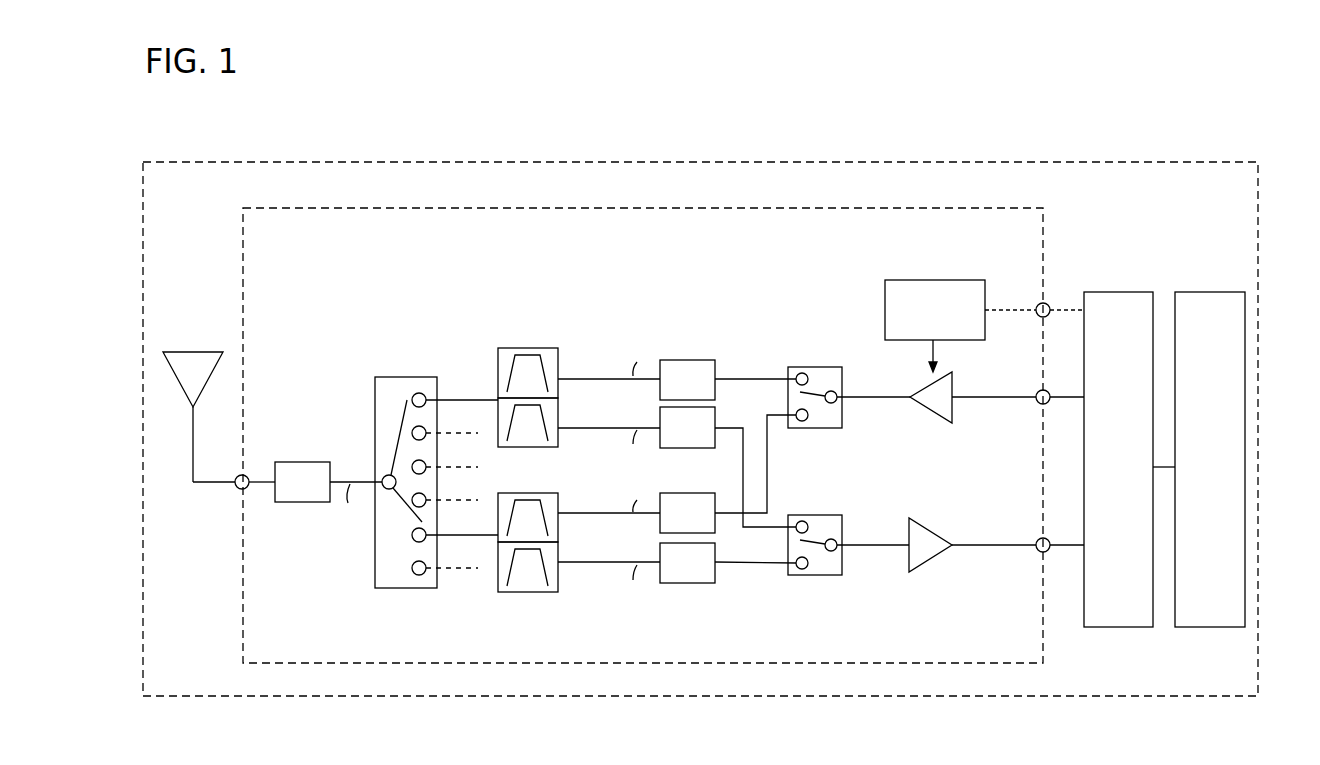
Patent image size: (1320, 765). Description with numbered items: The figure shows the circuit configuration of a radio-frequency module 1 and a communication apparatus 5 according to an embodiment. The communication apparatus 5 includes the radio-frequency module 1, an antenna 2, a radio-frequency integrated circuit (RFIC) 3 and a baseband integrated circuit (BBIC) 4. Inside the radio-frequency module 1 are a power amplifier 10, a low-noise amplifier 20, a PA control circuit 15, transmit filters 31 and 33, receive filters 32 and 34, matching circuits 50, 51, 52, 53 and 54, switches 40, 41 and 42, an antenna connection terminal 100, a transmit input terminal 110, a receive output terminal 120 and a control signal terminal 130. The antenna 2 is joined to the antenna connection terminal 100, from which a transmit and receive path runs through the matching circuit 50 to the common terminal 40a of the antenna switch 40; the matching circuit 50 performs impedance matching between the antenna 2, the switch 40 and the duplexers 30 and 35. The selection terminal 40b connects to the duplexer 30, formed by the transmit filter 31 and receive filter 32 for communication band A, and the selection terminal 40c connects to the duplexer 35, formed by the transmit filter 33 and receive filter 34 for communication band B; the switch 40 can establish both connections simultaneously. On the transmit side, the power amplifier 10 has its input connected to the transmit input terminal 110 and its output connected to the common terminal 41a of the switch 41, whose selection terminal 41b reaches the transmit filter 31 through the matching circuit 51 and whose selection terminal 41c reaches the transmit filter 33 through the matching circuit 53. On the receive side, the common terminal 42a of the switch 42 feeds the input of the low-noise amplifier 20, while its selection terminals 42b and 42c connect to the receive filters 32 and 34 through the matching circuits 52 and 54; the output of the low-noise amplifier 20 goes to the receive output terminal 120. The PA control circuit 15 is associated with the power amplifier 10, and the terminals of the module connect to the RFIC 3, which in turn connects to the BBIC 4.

The radio-frequency module 1 is at (973, 207).
The antenna 2 is at (195, 351).
The radio-frequency integrated circuit (RFIC) 3 is at (1118, 292).
The baseband integrated circuit (BBIC) 4 is at (1210, 292).
The communication apparatus 5 is at (1223, 162).
The power amplifier 10 is at (922, 408).
The PA control circuit 15 is at (920, 280).
The low-noise amplifier 20 is at (925, 528).
The duplexer 30 is at (576, 395).
The transmit filter 31 is at (560, 356).
The receive filter 32 is at (551, 429).
The transmit filter 33 is at (560, 495).
The receive filter 34 is at (551, 567).
The duplexer 35 is at (576, 543).
The switch 40 is at (408, 465).
The common terminal 40a is at (384, 475).
The selection terminal 40b is at (428, 397).
The selection terminal 40c is at (428, 538).
The switch 41 is at (829, 397).
The common terminal 41a is at (838, 399).
The selection terminal 41b is at (800, 372).
The selection terminal 41c is at (803, 422).
The switch 42 is at (835, 545).
The common terminal 42a is at (838, 547).
The selection terminal 42b is at (800, 521).
The selection terminal 42c is at (803, 570).
The matching circuit 50 is at (294, 461).
The matching circuit 51 is at (686, 359).
The matching circuit 52 is at (686, 449).
The matching circuit 53 is at (686, 492).
The matching circuit 54 is at (686, 584).
The antenna connection terminal 100 is at (237, 488).
The transmit input terminal 110 is at (1037, 391).
The receive output terminal 120 is at (1037, 539).
The control signal terminal 130 is at (1037, 303).